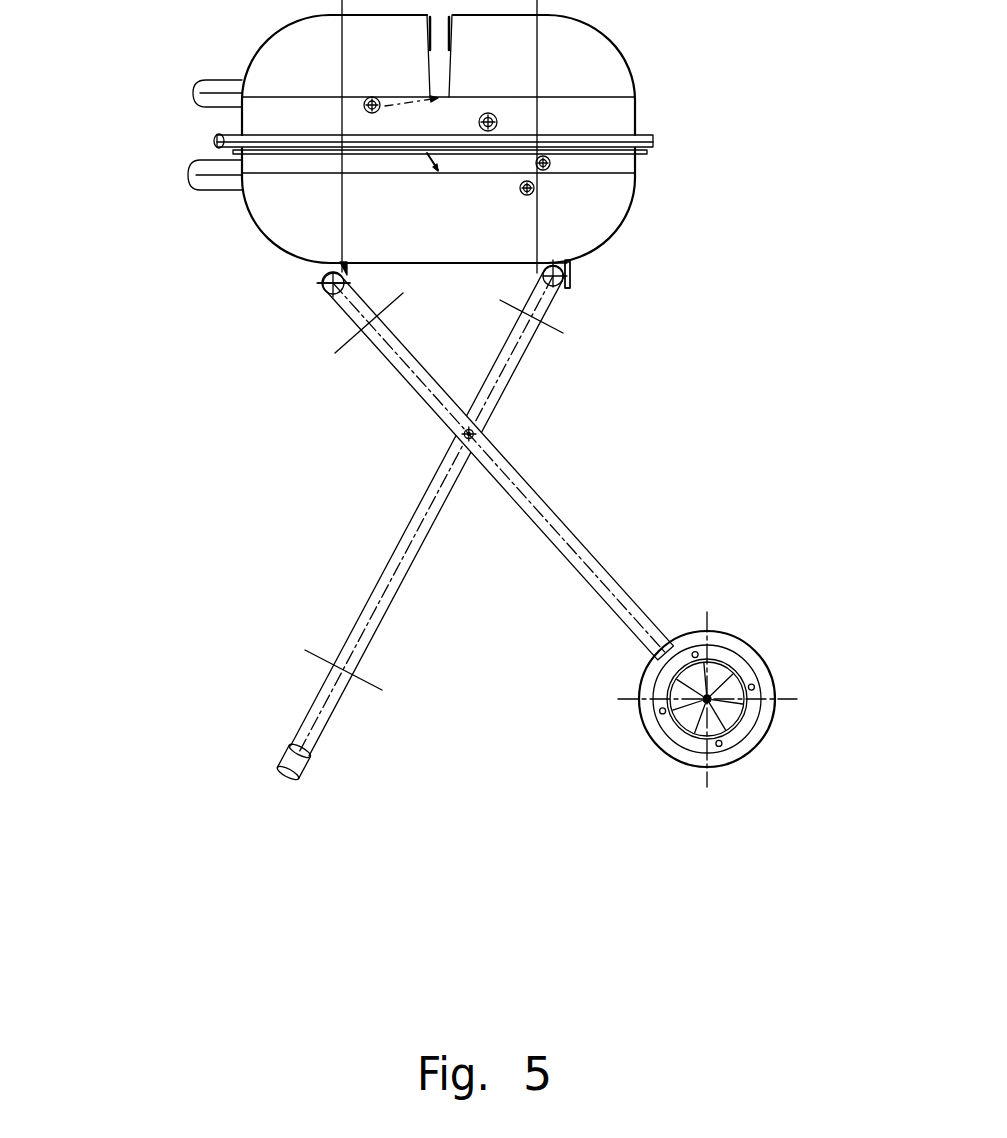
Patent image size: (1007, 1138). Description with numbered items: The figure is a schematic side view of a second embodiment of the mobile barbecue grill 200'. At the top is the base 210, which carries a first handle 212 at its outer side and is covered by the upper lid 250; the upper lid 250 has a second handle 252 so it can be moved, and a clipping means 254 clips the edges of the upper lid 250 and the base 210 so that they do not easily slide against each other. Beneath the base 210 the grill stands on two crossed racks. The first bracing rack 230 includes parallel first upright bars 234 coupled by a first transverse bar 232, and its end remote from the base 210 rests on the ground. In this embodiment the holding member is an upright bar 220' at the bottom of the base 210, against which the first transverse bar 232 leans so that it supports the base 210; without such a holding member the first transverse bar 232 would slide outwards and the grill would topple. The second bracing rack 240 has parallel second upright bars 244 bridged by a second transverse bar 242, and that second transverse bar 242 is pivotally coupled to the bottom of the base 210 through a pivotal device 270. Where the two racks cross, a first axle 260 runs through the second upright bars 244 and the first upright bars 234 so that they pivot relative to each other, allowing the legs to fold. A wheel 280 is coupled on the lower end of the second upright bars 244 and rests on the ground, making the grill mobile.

The mobile barbecue grill 200' is at (467, 450).
The base 210 is at (597, 210).
The first handle 212 is at (198, 182).
The upright bar 220' is at (681, 267).
The first bracing rack 230 is at (576, 521).
The first transverse bar 232 is at (565, 297).
The first upright bar 234 is at (507, 383).
The second bracing rack 240 is at (365, 466).
The second transverse bar 242 is at (340, 312).
The second upright bar 244 is at (448, 422).
The upper lid 250 is at (597, 60).
The second handle 252 is at (197, 90).
The clipping means 254 is at (215, 140).
The first axle 260 is at (473, 437).
The pivotal device 270 is at (318, 268).
The wheel 280 is at (722, 638).